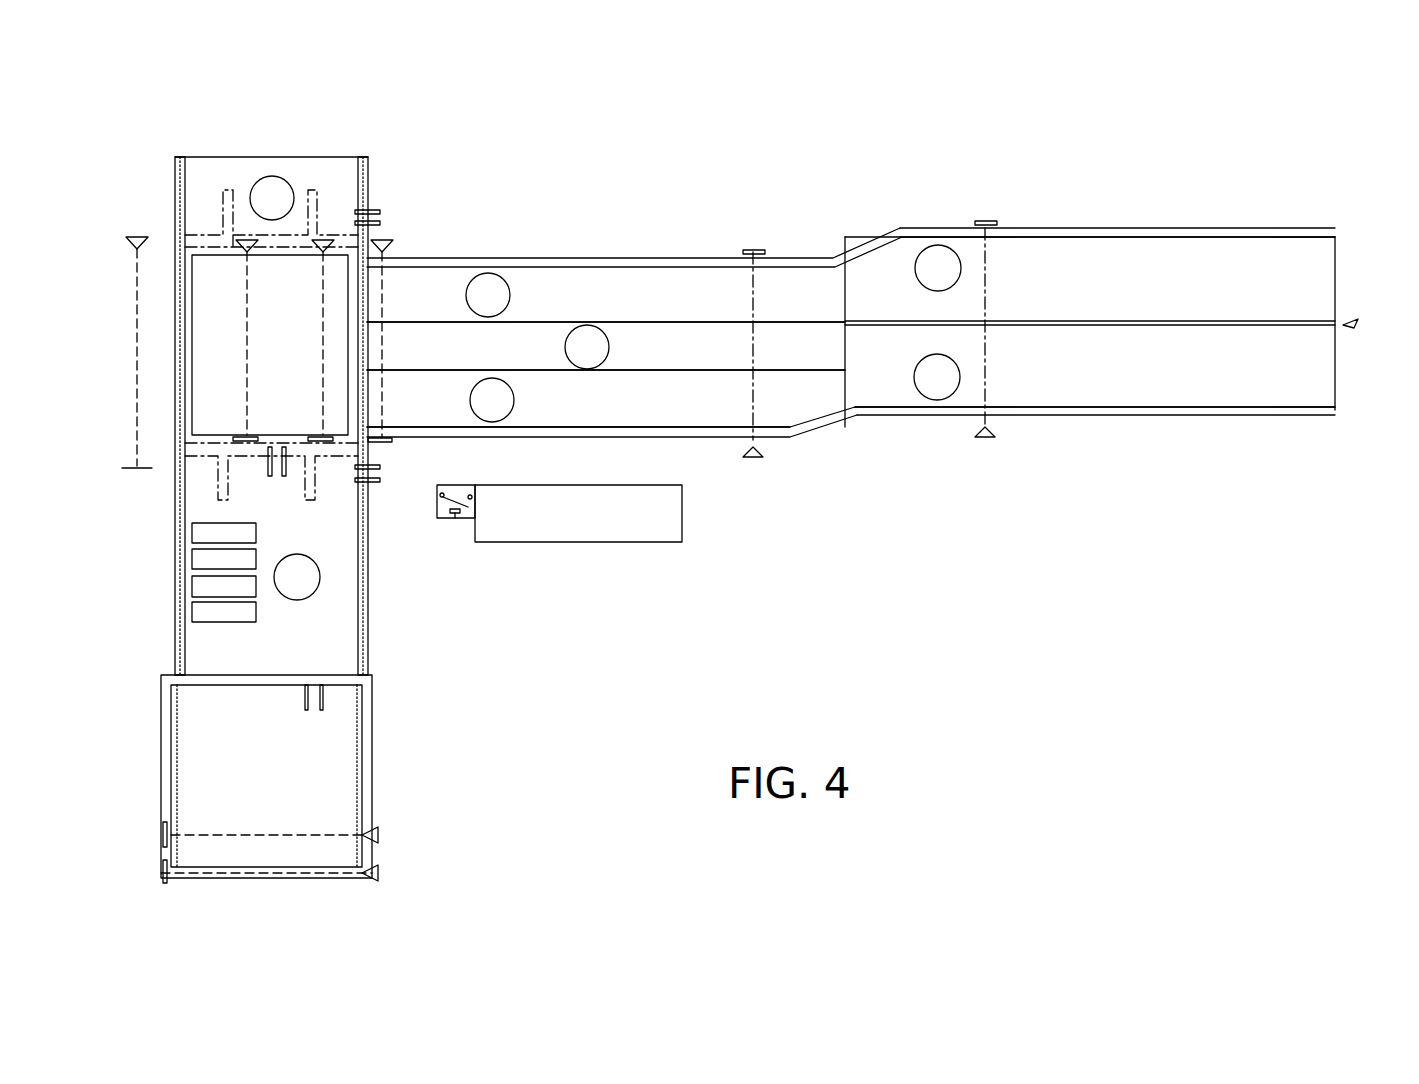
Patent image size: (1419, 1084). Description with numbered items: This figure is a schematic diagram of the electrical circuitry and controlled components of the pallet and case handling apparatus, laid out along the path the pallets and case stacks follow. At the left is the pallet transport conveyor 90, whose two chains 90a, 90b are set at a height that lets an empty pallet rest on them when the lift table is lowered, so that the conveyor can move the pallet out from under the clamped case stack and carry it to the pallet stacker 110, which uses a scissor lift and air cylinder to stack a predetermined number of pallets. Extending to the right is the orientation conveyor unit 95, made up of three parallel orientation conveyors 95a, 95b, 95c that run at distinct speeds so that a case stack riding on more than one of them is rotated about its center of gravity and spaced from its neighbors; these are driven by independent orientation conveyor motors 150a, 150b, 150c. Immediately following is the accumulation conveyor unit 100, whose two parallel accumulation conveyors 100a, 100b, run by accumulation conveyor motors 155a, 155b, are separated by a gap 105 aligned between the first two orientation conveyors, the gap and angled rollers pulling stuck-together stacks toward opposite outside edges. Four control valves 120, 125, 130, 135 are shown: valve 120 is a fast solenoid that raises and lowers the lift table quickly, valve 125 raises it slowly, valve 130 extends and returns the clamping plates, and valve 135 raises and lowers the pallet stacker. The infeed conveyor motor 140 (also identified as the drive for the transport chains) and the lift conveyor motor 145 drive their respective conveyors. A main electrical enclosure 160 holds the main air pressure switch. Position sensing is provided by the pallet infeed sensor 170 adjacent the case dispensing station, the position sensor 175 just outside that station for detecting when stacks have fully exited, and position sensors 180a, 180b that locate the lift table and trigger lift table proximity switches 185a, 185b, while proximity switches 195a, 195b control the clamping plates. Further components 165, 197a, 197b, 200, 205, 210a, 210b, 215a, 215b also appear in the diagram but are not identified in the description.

The pallet transport conveyor 90 is at (183, 182).
The chain 90a is at (178, 183).
The chain 90b is at (360, 190).
The orientation conveyor unit 95 is at (605, 188).
The orientation conveyor 95a is at (693, 290).
The orientation conveyor 95b is at (682, 347).
The orientation conveyor 95c is at (713, 407).
The accumulation conveyor unit 100 is at (1086, 188).
The accumulation conveyor 100a is at (1153, 270).
The accumulation conveyor 100b is at (1185, 378).
The gap 105 is at (1352, 324).
The pallet stacker 110 is at (280, 790).
The control valve 120 is at (192, 529).
The solenoid valve 125 is at (192, 557).
The solenoid valve 130 is at (192, 590).
The solenoid valve 135 is at (192, 616).
The infeed conveyor motor 140 is at (295, 600).
The lift conveyor motor 145 is at (265, 176).
The orientation conveyor motor 150a is at (510, 290).
The orientation conveyor motor 150b is at (605, 325).
The orientation conveyor motor 150c is at (492, 422).
The accumulation conveyor motor 155a is at (933, 246).
The accumulation conveyor motor 155b is at (930, 400).
The main electrical enclosure 160 is at (638, 542).
The switch 165 is at (462, 520).
The pallet infeed sensor 170 is at (137, 232).
The position sensor 175 is at (384, 245).
The position sensor 180a is at (323, 238).
The position sensor 180b is at (247, 238).
The lift table proximity switch 185a is at (268, 468).
The lift table proximity switch 185b is at (284, 478).
The proximity switch 195a is at (380, 223).
The proximity switch 195b is at (380, 212).
The first lower sensor 197a is at (380, 467).
The second lower sensor 197b is at (380, 481).
The transfer position indicator 200 is at (753, 457).
The output position indicator 205 is at (985, 440).
The first loading indicator 210a is at (378, 835).
The second loading indicator 210b is at (378, 873).
The first guide 215a is at (302, 708).
The second guide 215b is at (324, 708).